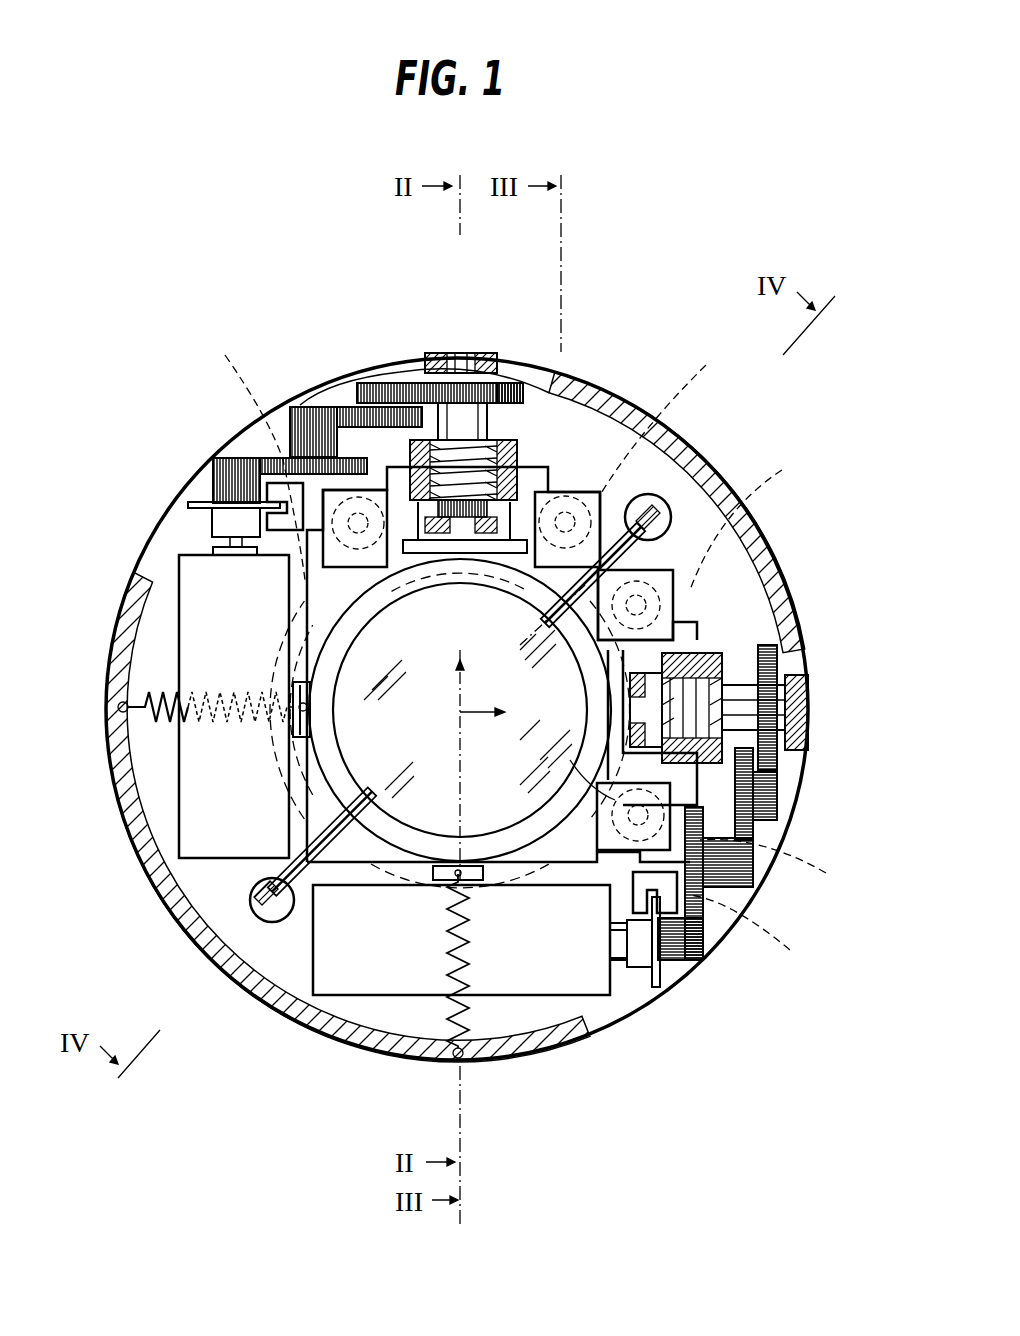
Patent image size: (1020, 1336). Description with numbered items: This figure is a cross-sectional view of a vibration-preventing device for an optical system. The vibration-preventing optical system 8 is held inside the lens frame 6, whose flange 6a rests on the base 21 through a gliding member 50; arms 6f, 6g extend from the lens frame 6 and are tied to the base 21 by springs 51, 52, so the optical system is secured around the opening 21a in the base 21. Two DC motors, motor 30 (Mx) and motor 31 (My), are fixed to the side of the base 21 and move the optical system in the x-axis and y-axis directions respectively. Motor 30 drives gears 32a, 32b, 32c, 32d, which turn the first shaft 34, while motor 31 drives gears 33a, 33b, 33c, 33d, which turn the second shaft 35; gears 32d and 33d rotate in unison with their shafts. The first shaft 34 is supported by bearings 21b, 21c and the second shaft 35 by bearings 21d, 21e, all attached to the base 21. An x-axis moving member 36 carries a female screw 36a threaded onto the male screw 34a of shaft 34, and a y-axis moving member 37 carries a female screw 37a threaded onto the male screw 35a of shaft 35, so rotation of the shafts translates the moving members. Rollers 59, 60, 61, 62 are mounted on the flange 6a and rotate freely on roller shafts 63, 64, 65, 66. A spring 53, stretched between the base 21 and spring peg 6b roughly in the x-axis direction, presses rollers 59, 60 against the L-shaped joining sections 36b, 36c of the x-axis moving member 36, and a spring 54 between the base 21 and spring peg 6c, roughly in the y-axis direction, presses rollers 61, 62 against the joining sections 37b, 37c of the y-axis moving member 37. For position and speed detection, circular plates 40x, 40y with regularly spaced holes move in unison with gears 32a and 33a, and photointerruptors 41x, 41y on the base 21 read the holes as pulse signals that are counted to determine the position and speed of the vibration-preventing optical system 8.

The lens frame 6 is at (418, 832).
The flange 6a is at (330, 605).
The spring peg 6b is at (292, 738).
The spring peg 6c is at (440, 875).
The arm 6f is at (290, 920).
The arm 6g is at (650, 470).
The vibration-preventing optical system 8 is at (477, 765).
The base 21 is at (240, 890).
The opening 21a is at (305, 790).
The bearing 21b is at (735, 688).
The bearing 21c is at (690, 860).
The bearing 21d is at (462, 350).
The bearing 21e is at (440, 562).
The DC motor 30 is at (550, 990).
The DC motor 31 is at (178, 795).
The gear 32a is at (690, 960).
The gear 32b is at (740, 880).
The gear 32c is at (777, 775).
The gear 32d is at (777, 690).
The gear 33a is at (215, 460).
The gear 33b is at (315, 403).
The gear 33c is at (370, 380).
The gear 33d is at (510, 380).
The first shaft 34 is at (745, 690).
The male screw 34a is at (745, 718).
The second shaft 35 is at (565, 400).
The male screw 35a is at (545, 470).
The x-axis moving member 36 is at (690, 590).
The female screw 36a is at (740, 685).
The joining section 36b is at (570, 760).
The joining section 36c is at (612, 655).
The y-axis moving member 37 is at (600, 470).
The female screw 37a is at (400, 430).
The joining section 37b is at (385, 575).
The joining section 37c is at (590, 580).
The circular plate 40x is at (660, 975).
The circular plate 40y is at (195, 503).
The photointerruptor 41x is at (700, 910).
The photointerruptor 41y is at (280, 490).
The gliding member 50 is at (255, 885).
The spring 51 is at (262, 940).
The spring 52 is at (665, 505).
The spring 53 is at (122, 702).
The spring 54 is at (464, 1055).
The roller 59 is at (660, 600).
The roller 60 is at (760, 928).
The roller 61 is at (669, 419).
The roller 62 is at (241, 453).
The roller shaft 63 is at (757, 519).
The roller shaft 64 is at (784, 862).
The roller shaft 65 is at (490, 562).
The roller shaft 66 is at (345, 395).